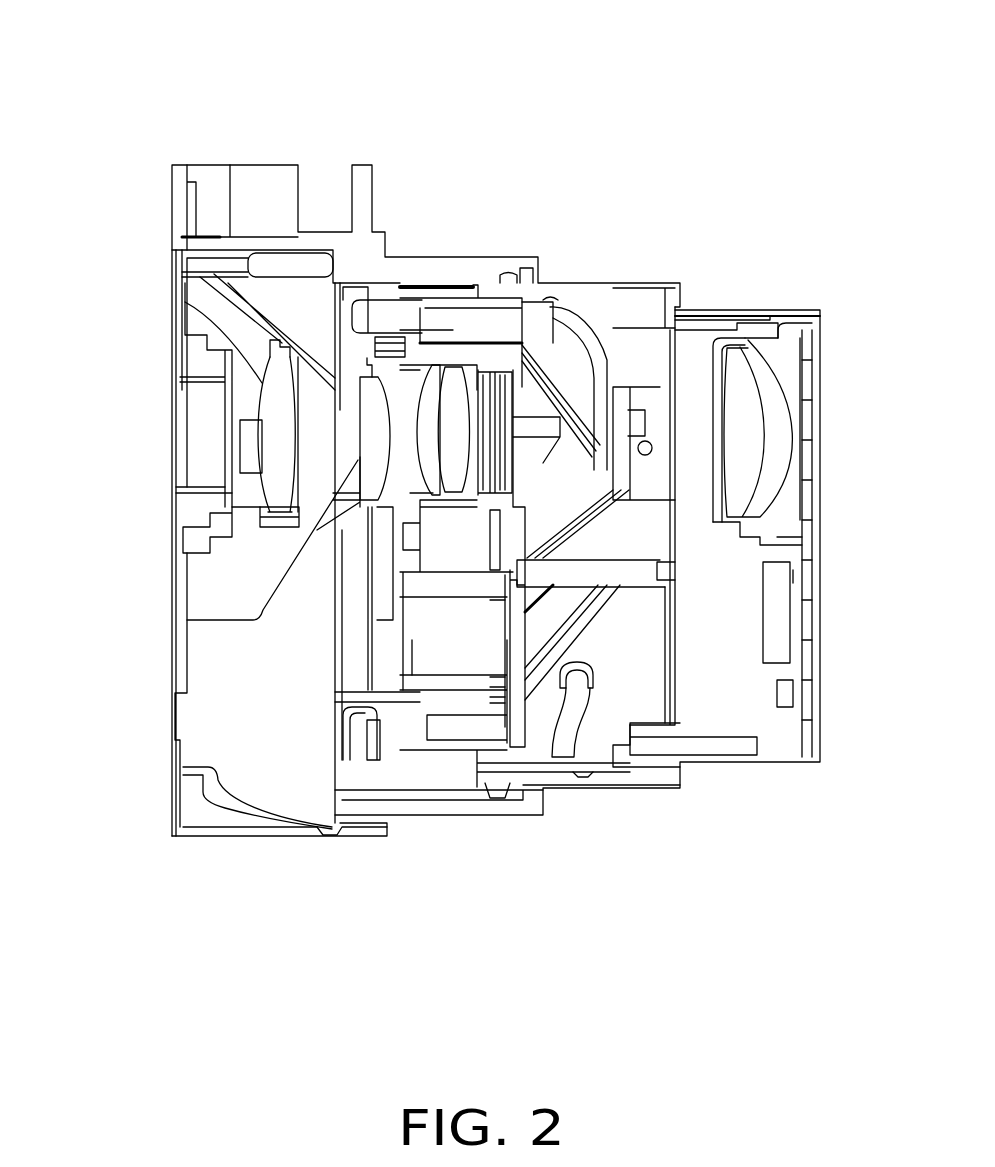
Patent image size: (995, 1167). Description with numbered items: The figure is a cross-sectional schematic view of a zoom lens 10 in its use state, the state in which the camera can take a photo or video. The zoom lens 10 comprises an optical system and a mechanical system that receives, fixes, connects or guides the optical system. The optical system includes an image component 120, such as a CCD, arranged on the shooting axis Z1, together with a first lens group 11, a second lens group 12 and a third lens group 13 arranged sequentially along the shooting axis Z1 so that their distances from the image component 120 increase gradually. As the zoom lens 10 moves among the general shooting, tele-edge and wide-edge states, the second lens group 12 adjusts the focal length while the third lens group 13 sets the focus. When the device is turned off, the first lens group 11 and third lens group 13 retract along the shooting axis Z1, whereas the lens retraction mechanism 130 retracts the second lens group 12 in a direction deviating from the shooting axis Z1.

The zoom lens 10 is at (496, 424).
The first lens group 11 is at (798, 348).
The second lens group 12 is at (400, 388).
The third lens group 13 is at (230, 327).
The image component 120 is at (200, 415).
The lens retraction mechanism 130 is at (500, 232).
The shooting axis Z1 is at (215, 433).